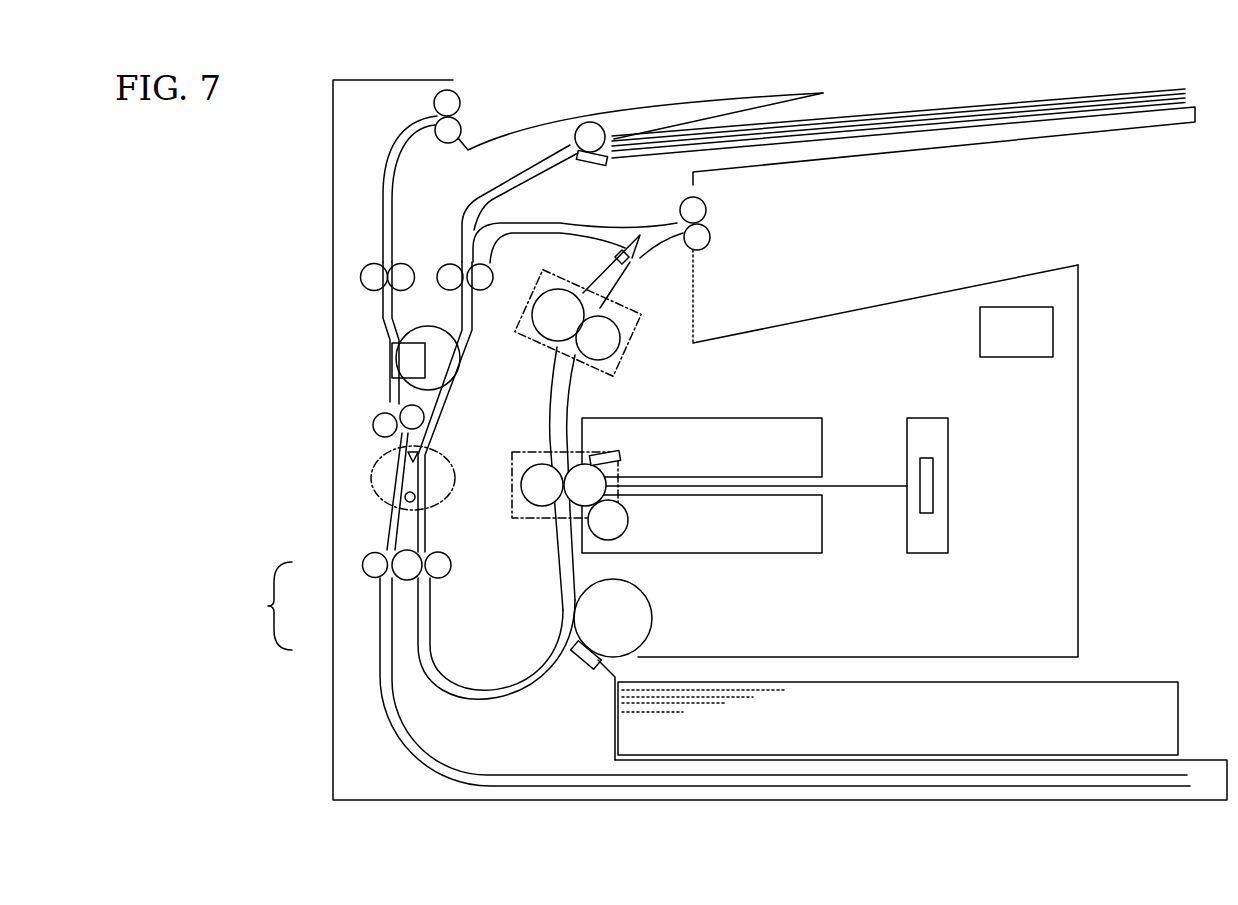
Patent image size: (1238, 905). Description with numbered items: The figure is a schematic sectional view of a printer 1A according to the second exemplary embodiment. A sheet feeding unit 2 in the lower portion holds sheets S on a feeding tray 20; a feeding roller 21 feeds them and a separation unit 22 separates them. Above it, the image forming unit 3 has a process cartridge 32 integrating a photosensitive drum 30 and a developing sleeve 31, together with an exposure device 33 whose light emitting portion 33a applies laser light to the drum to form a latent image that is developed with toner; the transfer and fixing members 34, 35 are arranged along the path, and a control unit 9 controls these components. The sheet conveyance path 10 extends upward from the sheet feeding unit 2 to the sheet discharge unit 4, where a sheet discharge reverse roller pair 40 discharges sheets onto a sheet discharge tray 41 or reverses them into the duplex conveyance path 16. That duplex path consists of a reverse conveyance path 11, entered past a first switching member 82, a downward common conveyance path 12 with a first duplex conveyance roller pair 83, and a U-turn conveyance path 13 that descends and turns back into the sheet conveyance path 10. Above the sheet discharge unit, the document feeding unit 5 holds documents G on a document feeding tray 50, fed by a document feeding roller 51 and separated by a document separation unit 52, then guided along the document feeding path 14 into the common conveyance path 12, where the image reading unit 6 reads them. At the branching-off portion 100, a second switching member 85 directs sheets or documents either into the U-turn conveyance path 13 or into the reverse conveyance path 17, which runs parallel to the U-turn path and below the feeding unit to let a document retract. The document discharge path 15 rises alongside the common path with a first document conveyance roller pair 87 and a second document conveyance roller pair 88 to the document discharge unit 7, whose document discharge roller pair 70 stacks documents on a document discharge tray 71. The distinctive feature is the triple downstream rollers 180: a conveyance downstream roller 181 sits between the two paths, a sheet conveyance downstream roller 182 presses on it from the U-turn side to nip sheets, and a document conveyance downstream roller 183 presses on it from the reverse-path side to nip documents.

The printer 1A is at (920, 70).
The sheet feeding unit 2 is at (899, 670).
The image forming unit 3 is at (856, 392).
The sheet discharge unit 4 is at (837, 222).
The document feeding unit 5 is at (840, 96).
The image reading unit 6 is at (400, 340).
The document discharge unit 7 is at (548, 70).
The control unit 9 is at (1025, 357).
The sheet conveyance path 10 is at (550, 428).
The reverse conveyance path 11 is at (506, 234).
The common conveyance path 12 is at (452, 422).
The U-turn conveyance path 13 is at (430, 612).
The document feeding path 14 is at (490, 198).
The document discharge path 15 is at (383, 183).
The duplex conveyance path 16 is at (488, 714).
The reverse conveyance path 17 is at (392, 527).
The feeding tray 20 is at (613, 731).
The feeding roller 21 is at (652, 610).
The separation unit 22 is at (584, 666).
The photosensitive drum 30 is at (620, 462).
The developing sleeve 31 is at (628, 518).
The process cartridge 32 is at (790, 418).
The exposure device 33 is at (948, 447).
The light emitting portion 33a is at (933, 490).
The fixing roller 34 is at (538, 497).
The registration roller pair 35 is at (632, 362).
The sheet discharge reverse roller pair 40 is at (711, 238).
The sheet discharge tray 41 is at (822, 316).
The document feeding tray 50 is at (1195, 107).
The document feeding roller 51 is at (590, 122).
The document separation unit 52 is at (596, 165).
The document discharge roller pair 70 is at (434, 101).
The document discharge tray 71 is at (526, 128).
The first switching member 82 is at (632, 264).
The first duplex conveyance roller pair 83 is at (448, 263).
The second switching member 85 is at (400, 478).
The first document conveyance roller pair 87 is at (380, 418).
The second document conveyance roller pair 88 is at (360, 278).
The branching-off portion 100 is at (375, 492).
The triple downstream rollers 180 is at (256, 606).
The conveyance downstream roller 181 is at (404, 580).
The sheet conveyance downstream roller 182 is at (438, 580).
The document conveyance downstream roller 183 is at (363, 568).
The document G is at (995, 106).
The sheet S is at (1130, 682).